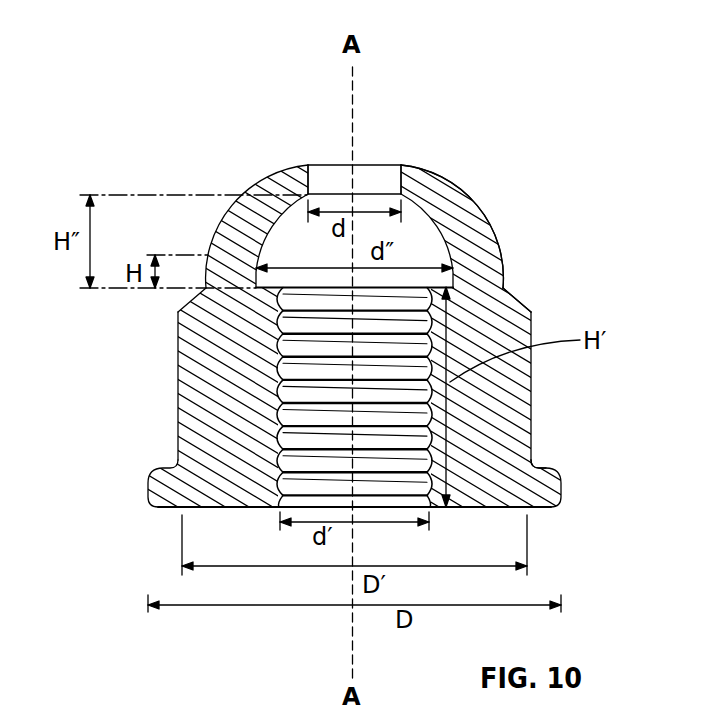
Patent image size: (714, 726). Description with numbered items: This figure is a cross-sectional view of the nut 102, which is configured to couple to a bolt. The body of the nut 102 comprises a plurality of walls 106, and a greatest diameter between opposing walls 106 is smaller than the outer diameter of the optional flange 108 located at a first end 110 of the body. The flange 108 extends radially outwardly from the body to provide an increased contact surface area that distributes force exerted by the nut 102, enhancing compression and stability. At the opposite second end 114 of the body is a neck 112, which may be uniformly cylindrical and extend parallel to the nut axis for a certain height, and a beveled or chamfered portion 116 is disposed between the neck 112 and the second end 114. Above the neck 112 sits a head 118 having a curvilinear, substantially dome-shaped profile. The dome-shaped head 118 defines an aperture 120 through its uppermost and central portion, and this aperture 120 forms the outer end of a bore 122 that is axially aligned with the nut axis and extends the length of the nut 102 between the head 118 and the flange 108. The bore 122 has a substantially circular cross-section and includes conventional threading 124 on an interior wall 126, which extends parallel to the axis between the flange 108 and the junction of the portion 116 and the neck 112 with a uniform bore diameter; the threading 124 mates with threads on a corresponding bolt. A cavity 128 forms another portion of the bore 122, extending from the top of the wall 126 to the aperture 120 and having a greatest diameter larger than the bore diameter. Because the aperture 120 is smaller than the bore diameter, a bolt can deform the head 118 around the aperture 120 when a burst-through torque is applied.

The nut 102 is at (206, 62).
The walls 106 is at (533, 402).
The flange 108 is at (556, 464).
The first end 110 is at (533, 443).
The neck 112 is at (502, 246).
The second end 114 is at (505, 292).
The beveled or chamfered portion 116 is at (530, 311).
The head 118 is at (430, 186).
The aperture 120 is at (327, 149).
The bore 122 is at (376, 167).
The threading 124 is at (283, 476).
The interior wall 126 is at (283, 402).
The cavity 128 is at (400, 225).